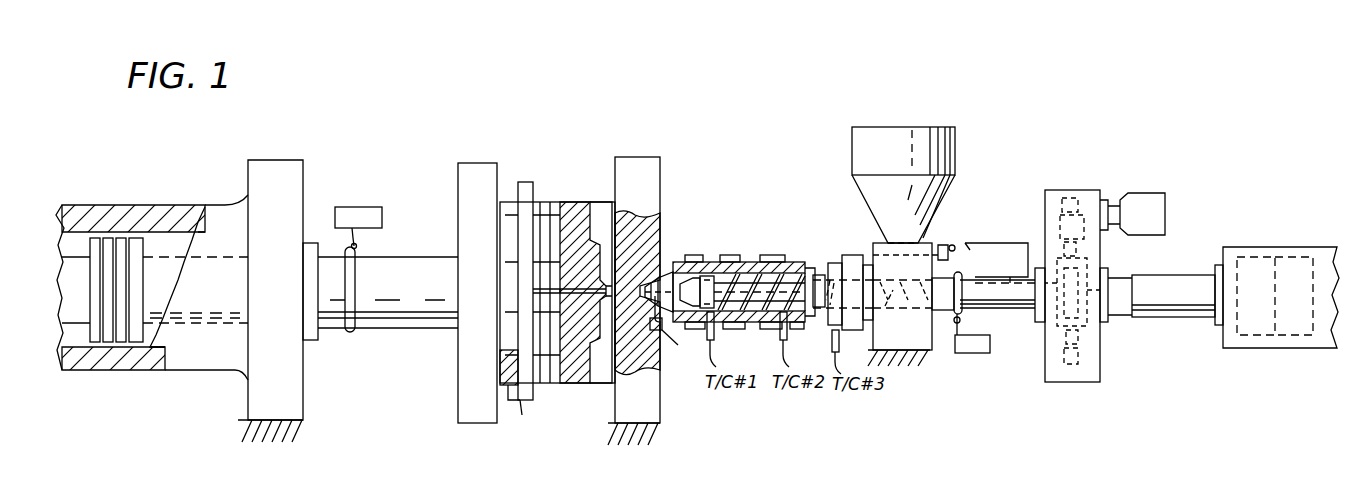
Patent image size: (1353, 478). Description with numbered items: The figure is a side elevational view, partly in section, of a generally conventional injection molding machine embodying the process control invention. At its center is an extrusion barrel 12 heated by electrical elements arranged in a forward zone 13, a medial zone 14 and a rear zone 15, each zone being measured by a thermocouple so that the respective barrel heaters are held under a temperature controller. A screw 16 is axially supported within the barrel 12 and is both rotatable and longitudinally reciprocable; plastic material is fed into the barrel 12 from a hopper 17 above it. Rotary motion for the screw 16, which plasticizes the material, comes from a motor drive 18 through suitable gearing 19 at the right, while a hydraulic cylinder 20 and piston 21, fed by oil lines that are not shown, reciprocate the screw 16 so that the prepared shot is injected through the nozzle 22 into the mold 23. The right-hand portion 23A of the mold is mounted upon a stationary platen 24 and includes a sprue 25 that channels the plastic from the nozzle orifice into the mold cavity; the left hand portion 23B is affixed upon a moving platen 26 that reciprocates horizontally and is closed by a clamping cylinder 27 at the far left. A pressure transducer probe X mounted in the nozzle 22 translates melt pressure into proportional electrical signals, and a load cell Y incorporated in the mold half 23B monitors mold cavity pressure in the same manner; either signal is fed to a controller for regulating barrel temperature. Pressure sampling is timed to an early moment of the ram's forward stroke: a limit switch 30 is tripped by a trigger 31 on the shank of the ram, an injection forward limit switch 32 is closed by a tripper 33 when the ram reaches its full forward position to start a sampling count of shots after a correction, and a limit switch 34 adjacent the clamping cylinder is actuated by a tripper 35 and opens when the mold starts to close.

The extrusion barrel 12 is at (744, 264).
The forward zone 13 is at (697, 255).
The medial zone 14 is at (770, 255).
The rear zone 15 is at (852, 256).
The screw 16 is at (756, 322).
The hopper 17 is at (955, 158).
The motor drive 18 is at (1152, 226).
The gearing 19 is at (1080, 358).
The hydraulic cylinder 20 is at (1277, 300).
The piston 21 is at (1275, 335).
The nozzle 22 is at (658, 274).
The mold 23 is at (557, 260).
The right-hand portion of the mold 23A is at (590, 205).
The left-hand portion of the mold 23B is at (545, 190).
The stationary platen 24 is at (660, 162).
The sprue 25 is at (650, 190).
The moving platen 26 is at (467, 164).
The clamping cylinder 27 is at (222, 207).
The limit switch LS30 30 is at (975, 354).
The trigger 31 is at (962, 313).
The injection forward limit switch LS32 32 is at (950, 246).
The tripper 33 is at (983, 255).
The limit switch LS34 34 is at (397, 200).
The tripper 35 is at (355, 330).
The pressure transducer probe X is at (688, 350).
The load cell Y is at (515, 404).